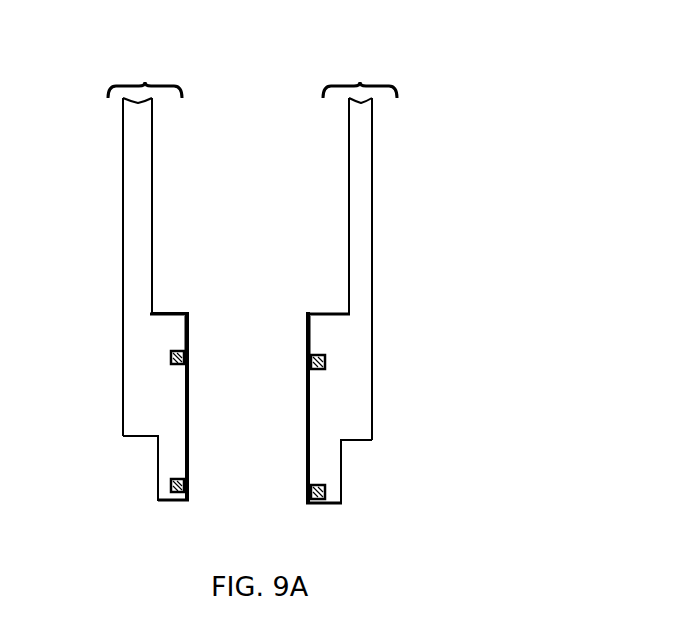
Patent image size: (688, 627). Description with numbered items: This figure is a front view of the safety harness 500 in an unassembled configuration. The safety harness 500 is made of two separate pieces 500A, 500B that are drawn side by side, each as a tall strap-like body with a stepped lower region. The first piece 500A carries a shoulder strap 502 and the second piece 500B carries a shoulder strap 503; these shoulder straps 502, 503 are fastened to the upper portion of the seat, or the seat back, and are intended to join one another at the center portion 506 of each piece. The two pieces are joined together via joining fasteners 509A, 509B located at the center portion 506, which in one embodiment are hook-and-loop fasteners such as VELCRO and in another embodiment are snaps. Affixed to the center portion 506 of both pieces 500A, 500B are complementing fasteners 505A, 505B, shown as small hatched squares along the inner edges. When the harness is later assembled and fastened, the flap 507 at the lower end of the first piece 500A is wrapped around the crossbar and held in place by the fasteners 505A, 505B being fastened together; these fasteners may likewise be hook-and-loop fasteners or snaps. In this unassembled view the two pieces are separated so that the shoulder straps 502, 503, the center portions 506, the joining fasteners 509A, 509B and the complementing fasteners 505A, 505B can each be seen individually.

The safety harness 500 is at (494, 86).
The first piece 500A is at (239, 269).
The second piece 500B is at (341, 235).
The shoulder strap 502 is at (142, 242).
The shoulder strap 503 is at (360, 231).
The complementing fastener 505A is at (178, 492).
The complementing fastener 505B is at (188, 360).
The center portion 506 is at (152, 397).
The flap 507 is at (175, 460).
The joining fastener 509A is at (185, 338).
The joining fastener 509B is at (307, 417).